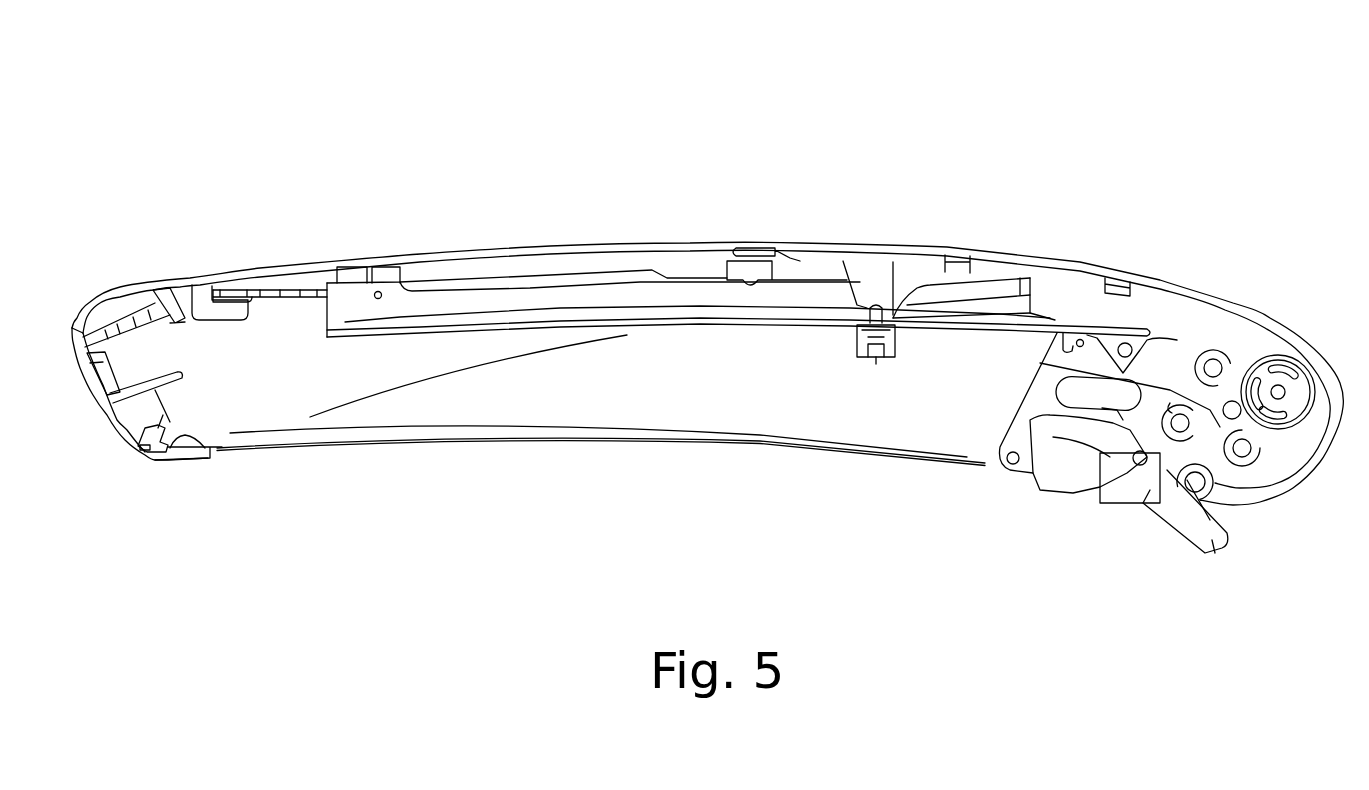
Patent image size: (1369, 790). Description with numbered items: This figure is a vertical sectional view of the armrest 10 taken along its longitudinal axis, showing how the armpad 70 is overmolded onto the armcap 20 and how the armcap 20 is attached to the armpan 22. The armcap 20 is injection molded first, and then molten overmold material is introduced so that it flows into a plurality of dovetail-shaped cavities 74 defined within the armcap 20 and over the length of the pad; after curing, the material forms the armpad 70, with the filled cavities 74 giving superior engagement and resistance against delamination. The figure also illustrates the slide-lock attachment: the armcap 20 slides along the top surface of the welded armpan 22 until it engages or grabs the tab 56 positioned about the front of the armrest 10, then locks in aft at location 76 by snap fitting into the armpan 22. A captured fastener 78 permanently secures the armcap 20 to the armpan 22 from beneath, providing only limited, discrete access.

The armrest 10 is at (875, 158).
The armcap 20 is at (192, 279).
The armpan 22 is at (497, 410).
The tab 56 is at (250, 293).
The armpad 70 is at (1057, 267).
The cavities 74 is at (748, 247).
The aft lock location 76 is at (1227, 281).
The fastener 78 is at (877, 358).